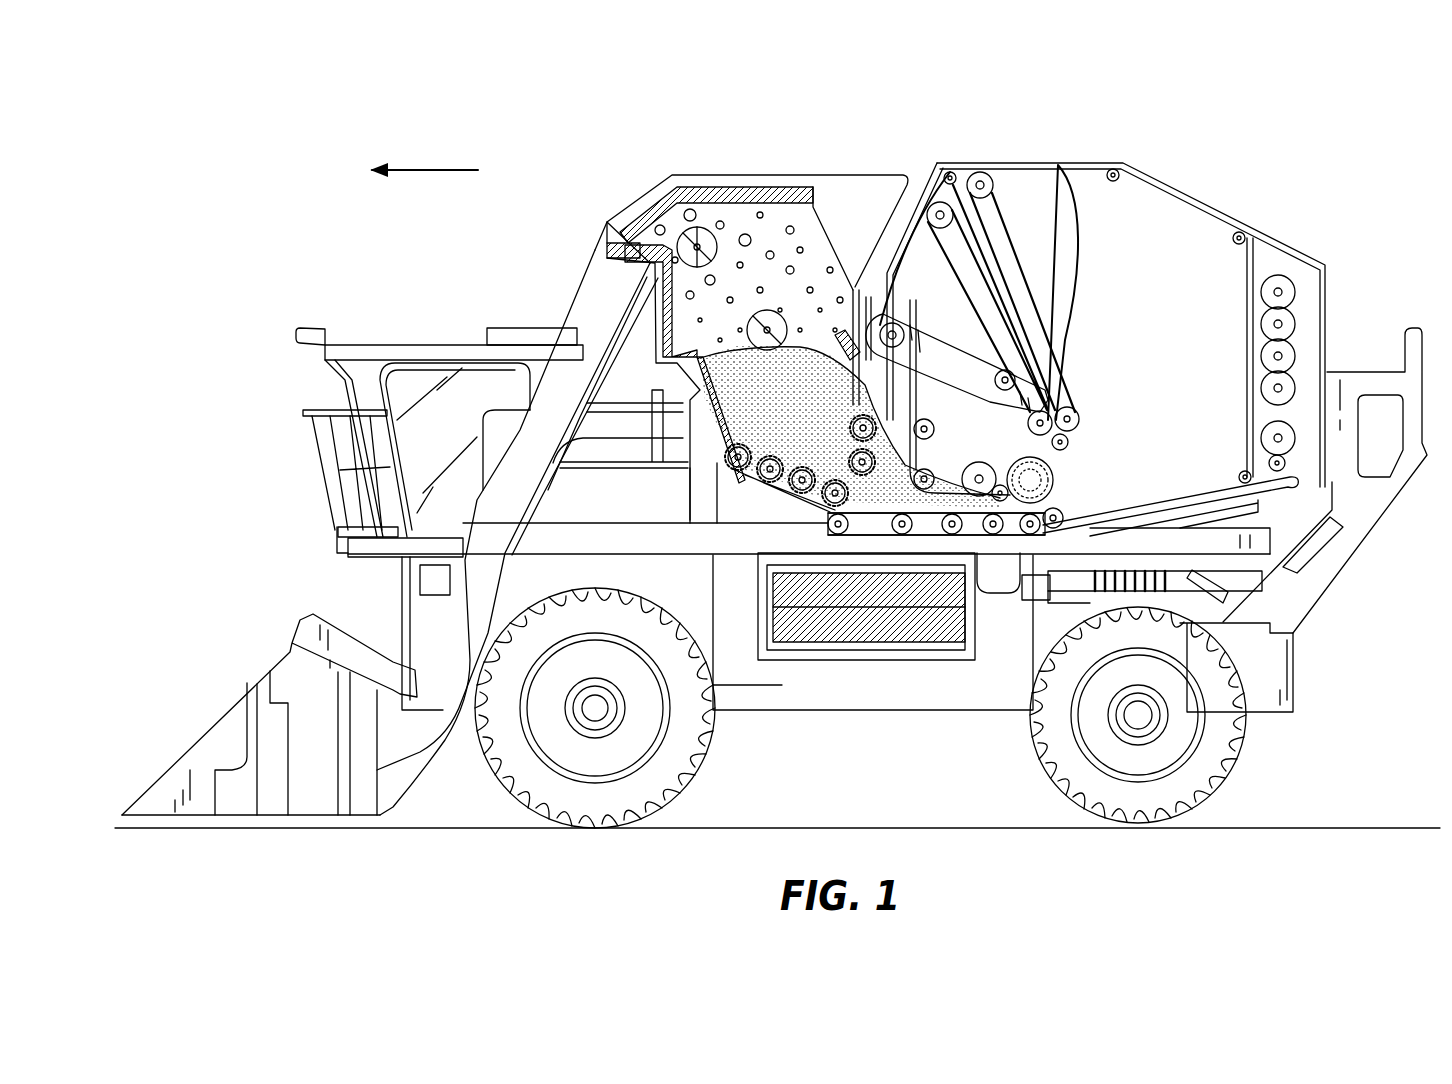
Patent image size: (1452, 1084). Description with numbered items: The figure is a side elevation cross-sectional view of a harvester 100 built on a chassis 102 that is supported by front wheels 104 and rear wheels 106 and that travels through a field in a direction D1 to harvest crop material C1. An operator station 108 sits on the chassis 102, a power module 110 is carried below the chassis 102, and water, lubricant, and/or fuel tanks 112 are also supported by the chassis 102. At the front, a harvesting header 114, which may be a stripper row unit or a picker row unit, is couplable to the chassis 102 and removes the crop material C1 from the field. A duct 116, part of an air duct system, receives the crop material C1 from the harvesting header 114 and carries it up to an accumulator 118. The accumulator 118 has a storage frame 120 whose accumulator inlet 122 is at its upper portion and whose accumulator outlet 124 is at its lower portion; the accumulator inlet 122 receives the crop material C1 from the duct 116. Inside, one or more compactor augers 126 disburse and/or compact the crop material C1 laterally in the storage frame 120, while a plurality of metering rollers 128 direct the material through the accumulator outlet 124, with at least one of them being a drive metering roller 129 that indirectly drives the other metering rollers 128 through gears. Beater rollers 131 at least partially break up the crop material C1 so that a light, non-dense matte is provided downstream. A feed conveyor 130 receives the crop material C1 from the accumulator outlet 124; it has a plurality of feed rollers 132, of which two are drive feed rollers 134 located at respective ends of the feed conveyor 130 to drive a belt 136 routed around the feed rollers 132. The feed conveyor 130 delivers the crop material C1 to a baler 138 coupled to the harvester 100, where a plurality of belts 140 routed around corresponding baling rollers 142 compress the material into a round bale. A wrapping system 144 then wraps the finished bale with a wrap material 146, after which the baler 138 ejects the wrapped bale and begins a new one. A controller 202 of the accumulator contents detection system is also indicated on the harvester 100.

The harvester 100 is at (1362, 162).
The chassis 102 is at (1270, 668).
The front wheels 104 is at (575, 815).
The rear wheels 106 is at (1185, 775).
The operator station 108 is at (400, 338).
The power module 110 is at (867, 660).
The tanks 112 is at (625, 505).
The harvesting header 114 is at (290, 672).
The duct 116 is at (583, 315).
The accumulator 118 is at (773, 172).
The storage frame 120 is at (792, 300).
The accumulator inlet 122 is at (640, 258).
The accumulator outlet 124 is at (902, 535).
The compactor augers 126 is at (747, 238).
The metering rollers 128 is at (833, 504).
The drive metering roller 129 is at (952, 172).
The feed conveyor 130 is at (930, 552).
The beater rollers 131 is at (985, 250).
The feed rollers 132 is at (993, 535).
The drive feed roller 134 is at (862, 537).
The belt 136 is at (862, 505).
The baler 138 is at (1207, 190).
The belts 140 is at (1072, 385).
The baling rollers 142 is at (1068, 430).
The wrapping system 144 is at (1300, 438).
The wrap material 146 is at (1286, 458).
The controller 202 is at (420, 578).
The crop material C1 is at (866, 440).
The direction D1 is at (425, 141).